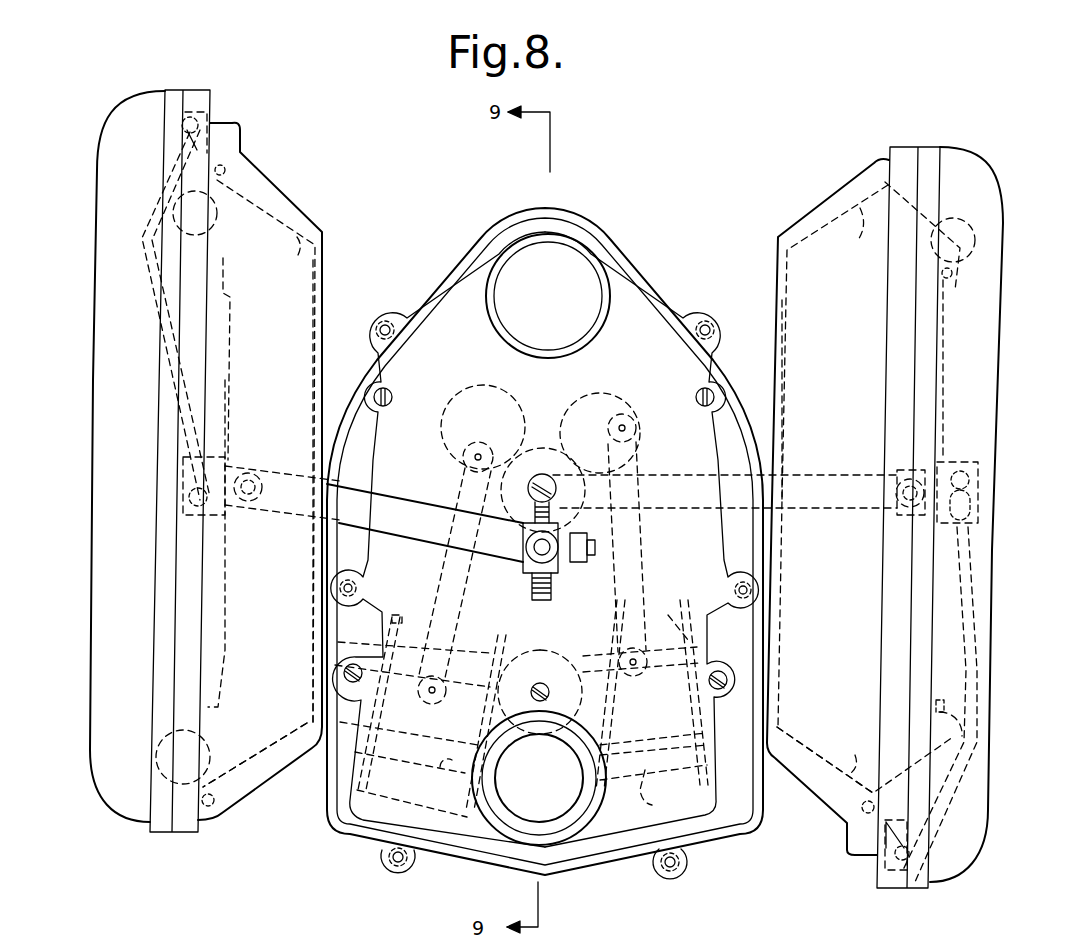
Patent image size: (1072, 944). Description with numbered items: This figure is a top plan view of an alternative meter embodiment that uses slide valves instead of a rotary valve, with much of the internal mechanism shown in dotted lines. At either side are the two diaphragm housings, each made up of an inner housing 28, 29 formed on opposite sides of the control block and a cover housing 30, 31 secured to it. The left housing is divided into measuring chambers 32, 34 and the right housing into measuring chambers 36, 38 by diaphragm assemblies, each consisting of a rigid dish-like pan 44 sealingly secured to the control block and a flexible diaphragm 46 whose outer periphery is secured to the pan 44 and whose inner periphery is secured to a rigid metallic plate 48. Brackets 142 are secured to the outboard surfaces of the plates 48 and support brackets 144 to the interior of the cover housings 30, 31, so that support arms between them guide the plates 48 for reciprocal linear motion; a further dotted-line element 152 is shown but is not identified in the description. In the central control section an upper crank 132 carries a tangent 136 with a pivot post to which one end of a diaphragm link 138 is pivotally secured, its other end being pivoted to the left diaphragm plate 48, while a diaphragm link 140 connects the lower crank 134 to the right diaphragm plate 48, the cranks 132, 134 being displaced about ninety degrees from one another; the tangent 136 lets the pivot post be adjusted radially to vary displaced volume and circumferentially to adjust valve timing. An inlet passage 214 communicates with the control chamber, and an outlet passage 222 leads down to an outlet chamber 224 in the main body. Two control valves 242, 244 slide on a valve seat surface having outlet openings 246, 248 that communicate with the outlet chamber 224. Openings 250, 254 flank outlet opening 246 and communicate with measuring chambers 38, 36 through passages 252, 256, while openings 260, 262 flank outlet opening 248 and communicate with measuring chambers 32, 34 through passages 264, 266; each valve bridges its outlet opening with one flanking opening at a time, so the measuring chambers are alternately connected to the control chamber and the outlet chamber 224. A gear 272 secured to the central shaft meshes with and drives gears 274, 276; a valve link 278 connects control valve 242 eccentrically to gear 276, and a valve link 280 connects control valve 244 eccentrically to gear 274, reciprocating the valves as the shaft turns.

The inner housing 28 is at (268, 178).
The inner housing 29 is at (833, 188).
The cover housing 30 is at (108, 150).
The cover housing 31 is at (988, 178).
The measuring chamber 32 is at (115, 405).
The measuring chamber 34 is at (258, 382).
The measuring chamber 36 is at (823, 399).
The measuring chamber 38 is at (955, 370).
The pan 44 is at (296, 243).
The diaphragm 46 is at (207, 236).
The plate 48 is at (228, 602).
The upper crank 132 is at (530, 578).
The lower crank 134 is at (560, 508).
The tangent 136 is at (562, 568).
The diaphragm link 138 is at (430, 505).
The diaphragm link 140 is at (700, 470).
The bracket 142 is at (226, 528).
The support bracket 144 is at (218, 125).
The link rod 152 is at (140, 222).
The inlet passage 214 is at (517, 312).
The outlet passage 222 is at (507, 797).
The outlet chamber 224 is at (560, 682).
The control valve 242 is at (560, 636).
The control valve 244 is at (520, 636).
The outlet opening 246 is at (647, 700).
The outlet opening 248 is at (427, 701).
The opening 250 is at (650, 795).
The passage 252 is at (780, 740).
The opening 254 is at (668, 618).
The passage 256 is at (780, 645).
The opening 260 is at (438, 766).
The opening 262 is at (410, 633).
The passage 264 is at (312, 780).
The passage 266 is at (330, 660).
The gear 272 is at (540, 447).
The gear 274 is at (480, 385).
The gear 276 is at (597, 390).
The valve link 278 is at (650, 540).
The valve link 280 is at (456, 556).